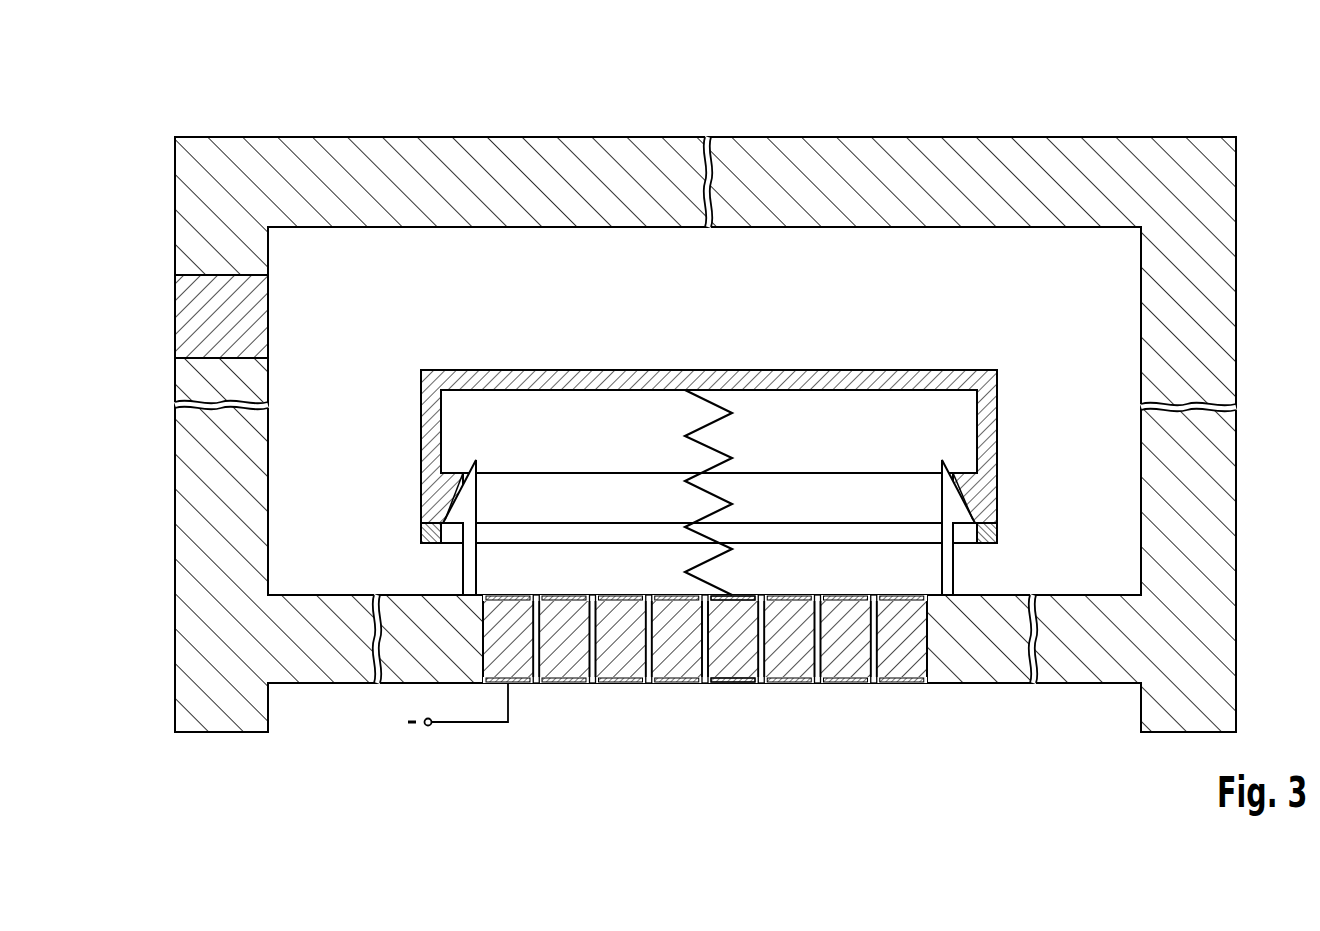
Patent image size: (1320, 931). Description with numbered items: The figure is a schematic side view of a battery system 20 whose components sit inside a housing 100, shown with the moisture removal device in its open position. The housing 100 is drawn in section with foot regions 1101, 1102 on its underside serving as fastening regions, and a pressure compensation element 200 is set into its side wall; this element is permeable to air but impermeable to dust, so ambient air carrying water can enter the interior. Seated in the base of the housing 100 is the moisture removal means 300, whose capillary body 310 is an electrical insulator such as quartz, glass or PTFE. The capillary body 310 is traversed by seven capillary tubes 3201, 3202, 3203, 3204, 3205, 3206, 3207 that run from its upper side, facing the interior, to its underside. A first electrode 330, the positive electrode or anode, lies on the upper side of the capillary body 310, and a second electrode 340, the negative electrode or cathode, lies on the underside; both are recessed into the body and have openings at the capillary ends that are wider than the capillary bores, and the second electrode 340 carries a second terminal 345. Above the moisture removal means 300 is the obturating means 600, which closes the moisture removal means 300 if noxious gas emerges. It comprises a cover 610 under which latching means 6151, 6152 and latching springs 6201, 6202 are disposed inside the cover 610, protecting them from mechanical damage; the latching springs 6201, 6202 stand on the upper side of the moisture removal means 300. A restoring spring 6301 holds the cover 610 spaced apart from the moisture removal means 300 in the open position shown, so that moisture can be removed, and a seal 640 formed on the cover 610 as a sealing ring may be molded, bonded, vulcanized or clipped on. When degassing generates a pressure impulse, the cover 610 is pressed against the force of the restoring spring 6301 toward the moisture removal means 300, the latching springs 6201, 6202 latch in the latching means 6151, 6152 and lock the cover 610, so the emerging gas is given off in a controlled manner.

The battery system 20 is at (693, 103).
The housing 100 is at (260, 137).
The pressure compensation element 200 is at (196, 318).
The foot region 1101 is at (175, 712).
The foot region 1102 is at (1237, 712).
The moisture removal means 300 is at (658, 707).
The capillary body 310 is at (733, 660).
The capillary tube 3201 is at (539, 595).
The capillary tube 3202 is at (592, 683).
The capillary tube 3203 is at (648, 595).
The capillary tube 3204 is at (705, 683).
The capillary tube 3205 is at (761, 683).
The capillary tube 3206 is at (817, 595).
The capillary tube 3207 is at (873, 595).
The first electrode 330 is at (752, 595).
The second electrode 340 is at (748, 683).
The second terminal 345 is at (428, 727).
The obturating means 600 is at (776, 345).
The cover 610 is at (884, 370).
The latching means 6151 is at (457, 472).
The latching means 6152 is at (963, 472).
The latching spring 6201 is at (478, 492).
The latching spring 6202 is at (940, 490).
The restoring means (spring) 6301 is at (720, 470).
The seal 640 is at (420, 538).